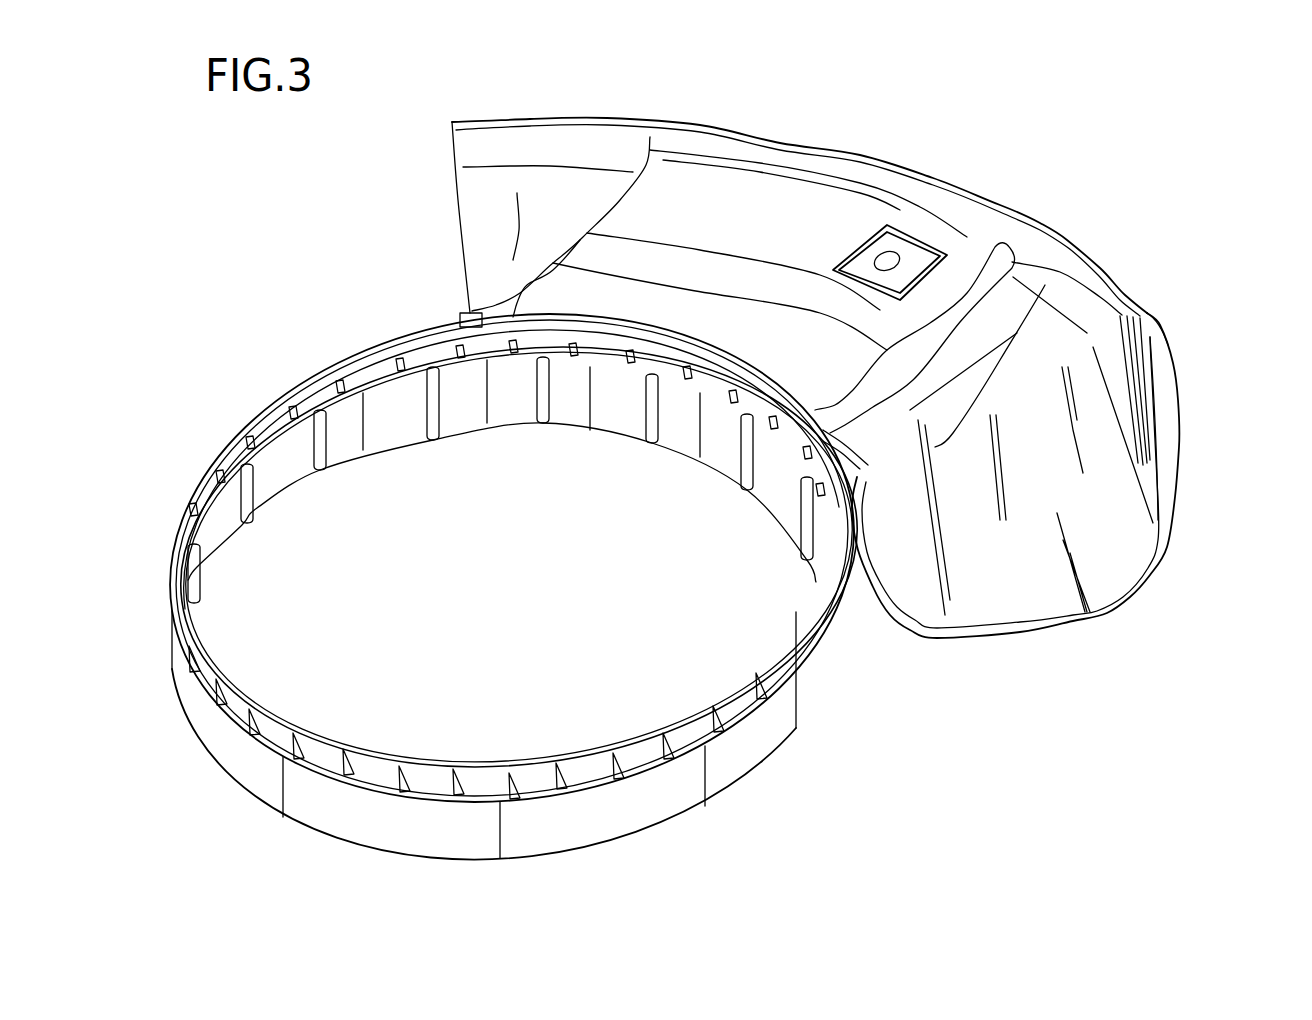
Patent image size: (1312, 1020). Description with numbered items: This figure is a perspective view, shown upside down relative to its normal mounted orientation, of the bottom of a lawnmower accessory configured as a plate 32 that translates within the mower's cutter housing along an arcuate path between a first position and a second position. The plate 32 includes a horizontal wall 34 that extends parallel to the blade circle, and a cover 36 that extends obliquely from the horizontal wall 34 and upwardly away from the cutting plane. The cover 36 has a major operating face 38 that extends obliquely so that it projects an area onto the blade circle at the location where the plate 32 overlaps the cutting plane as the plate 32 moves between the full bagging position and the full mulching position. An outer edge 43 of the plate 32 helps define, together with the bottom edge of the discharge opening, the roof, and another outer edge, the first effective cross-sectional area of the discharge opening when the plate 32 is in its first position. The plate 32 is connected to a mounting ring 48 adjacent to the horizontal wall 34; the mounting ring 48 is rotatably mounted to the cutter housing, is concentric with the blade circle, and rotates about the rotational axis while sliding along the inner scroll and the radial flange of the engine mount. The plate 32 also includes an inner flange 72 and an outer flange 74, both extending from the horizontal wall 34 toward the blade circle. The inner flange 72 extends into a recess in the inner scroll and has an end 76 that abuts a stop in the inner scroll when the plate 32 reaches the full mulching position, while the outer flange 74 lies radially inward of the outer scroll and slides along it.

The plate 32 is at (958, 118).
The horizontal wall 34 is at (473, 222).
The cover 36 is at (1027, 593).
The major operating face 38 is at (1021, 565).
The outer edge 43 is at (1183, 497).
The mounting ring 48 is at (733, 760).
The inner flange 72 is at (782, 383).
The outer flange 74 is at (570, 123).
The end 76 is at (822, 458).